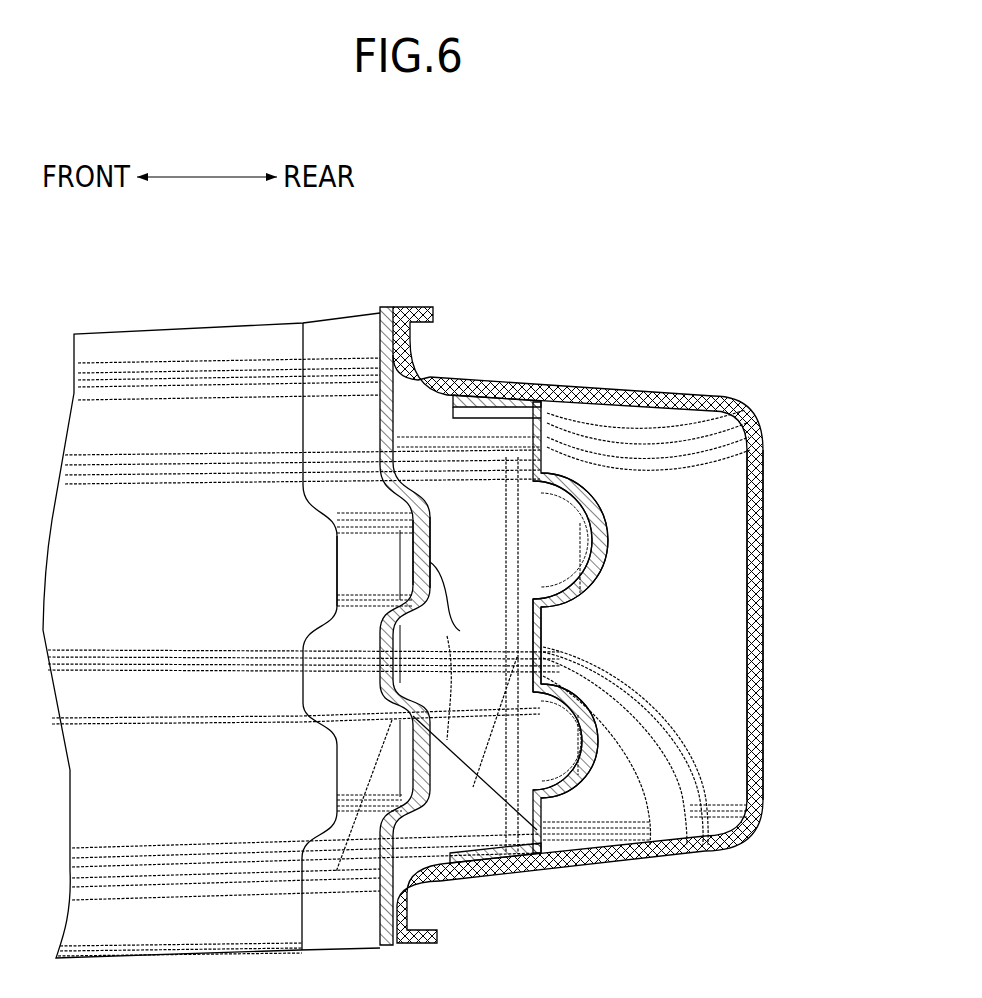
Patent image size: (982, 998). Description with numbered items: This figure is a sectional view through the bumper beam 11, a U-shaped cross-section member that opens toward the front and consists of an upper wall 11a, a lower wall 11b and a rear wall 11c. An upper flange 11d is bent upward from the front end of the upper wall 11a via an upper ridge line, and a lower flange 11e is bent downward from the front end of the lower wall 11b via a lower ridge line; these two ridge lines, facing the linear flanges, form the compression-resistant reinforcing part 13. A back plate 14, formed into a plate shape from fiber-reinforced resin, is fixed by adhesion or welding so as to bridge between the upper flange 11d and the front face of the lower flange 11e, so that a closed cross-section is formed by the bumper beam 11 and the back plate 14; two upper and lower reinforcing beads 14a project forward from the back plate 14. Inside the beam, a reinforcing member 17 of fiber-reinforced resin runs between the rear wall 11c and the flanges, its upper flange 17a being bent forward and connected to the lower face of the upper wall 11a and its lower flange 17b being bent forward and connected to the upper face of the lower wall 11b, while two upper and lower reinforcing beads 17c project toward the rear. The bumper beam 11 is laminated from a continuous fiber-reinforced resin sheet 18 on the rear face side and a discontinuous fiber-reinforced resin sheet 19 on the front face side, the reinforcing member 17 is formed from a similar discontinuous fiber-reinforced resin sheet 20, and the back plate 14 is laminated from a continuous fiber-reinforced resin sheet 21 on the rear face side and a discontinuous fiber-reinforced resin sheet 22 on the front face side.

The bumper beam 11 is at (621, 584).
The upper wall 11a is at (637, 391).
The lower wall 11b is at (596, 864).
The rear wall 11c is at (757, 668).
The upper flange 11d is at (411, 335).
The lower flange 11e is at (409, 918).
The compression-resistant reinforcing part 13 is at (400, 626).
The back plate 14 is at (301, 635).
The reinforcing bead 14a is at (456, 629).
The reinforcing member 17 is at (575, 629).
The upper flange 17a is at (479, 406).
The lower flange 17b is at (482, 855).
The reinforcing bead 17c is at (610, 562).
The continuous fiber-reinforced resin sheet 18 is at (765, 585).
The discontinuous fiber-reinforced resin sheet 19 is at (746, 613).
The discontinuous fiber-reinforced resin sheet 20 is at (542, 643).
The continuous fiber-reinforced resin sheet 21 is at (428, 532).
The discontinuous fiber-reinforced resin sheet 22 is at (355, 568).